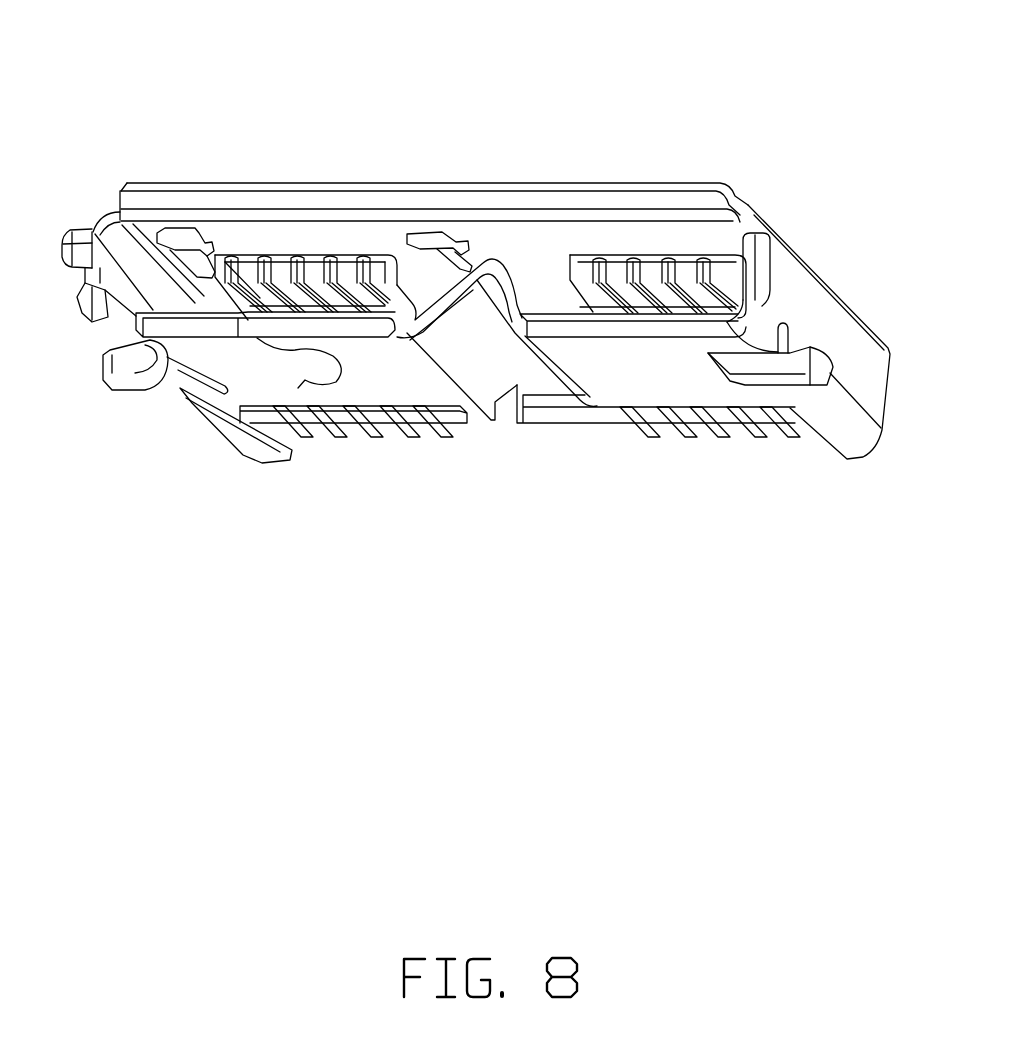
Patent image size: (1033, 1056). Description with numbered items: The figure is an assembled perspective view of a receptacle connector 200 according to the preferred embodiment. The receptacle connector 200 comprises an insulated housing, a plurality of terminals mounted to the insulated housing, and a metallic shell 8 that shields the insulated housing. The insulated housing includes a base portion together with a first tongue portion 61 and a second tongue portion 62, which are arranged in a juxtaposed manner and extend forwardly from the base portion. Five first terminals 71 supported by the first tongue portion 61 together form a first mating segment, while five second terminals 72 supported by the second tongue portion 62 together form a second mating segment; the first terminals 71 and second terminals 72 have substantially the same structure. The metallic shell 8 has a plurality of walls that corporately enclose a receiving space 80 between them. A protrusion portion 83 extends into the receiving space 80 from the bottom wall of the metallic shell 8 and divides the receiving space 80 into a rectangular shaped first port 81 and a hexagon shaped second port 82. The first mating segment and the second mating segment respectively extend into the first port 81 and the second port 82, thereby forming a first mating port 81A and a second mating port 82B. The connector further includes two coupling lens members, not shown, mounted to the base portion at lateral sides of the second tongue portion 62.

The receptacle connector 200 is at (272, 128).
The second port 82 is at (245, 238).
The receiving space 80 is at (410, 237).
The protrusion portion 83 is at (485, 257).
The first port 81 is at (547, 265).
The first mating port 81A is at (617, 240).
The first tongue portion 61 is at (683, 257).
The second mating port 82B is at (188, 277).
The second tongue portion 62 is at (261, 297).
The second terminals 72 is at (323, 313).
The metallic shell 8 is at (633, 360).
The first terminals 71 is at (693, 287).